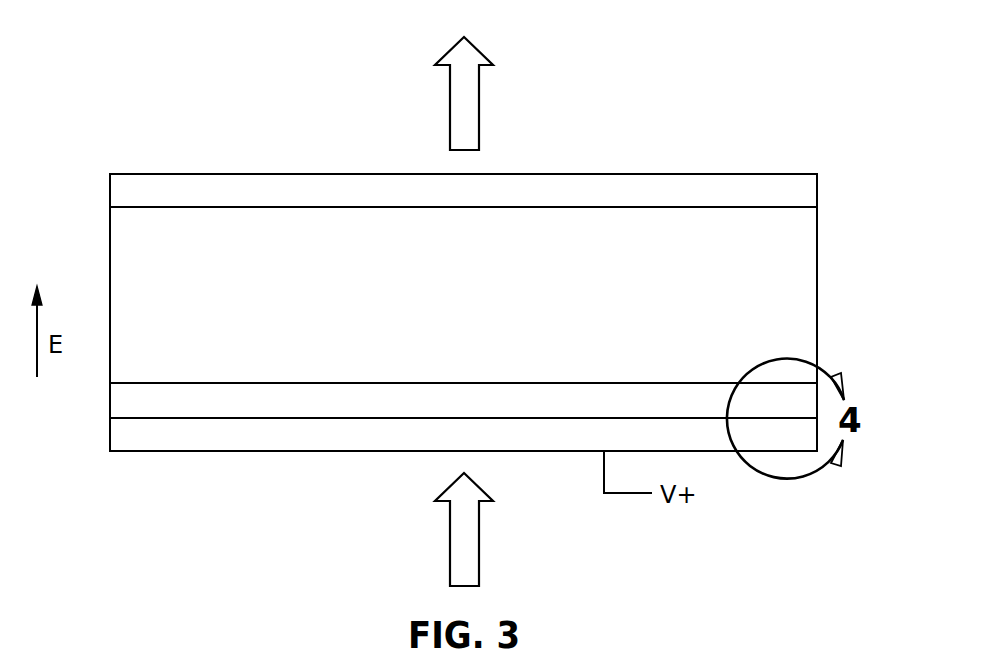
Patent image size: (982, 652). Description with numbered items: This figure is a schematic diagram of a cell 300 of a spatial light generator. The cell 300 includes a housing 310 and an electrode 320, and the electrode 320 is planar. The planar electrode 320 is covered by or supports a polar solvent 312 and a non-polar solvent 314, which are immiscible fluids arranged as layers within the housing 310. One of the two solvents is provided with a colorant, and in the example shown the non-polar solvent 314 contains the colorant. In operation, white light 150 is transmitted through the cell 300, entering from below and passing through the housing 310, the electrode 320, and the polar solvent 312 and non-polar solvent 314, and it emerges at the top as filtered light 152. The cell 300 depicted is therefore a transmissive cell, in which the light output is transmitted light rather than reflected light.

The cell 300 is at (716, 102).
The housing 310 is at (819, 299).
The polar solvent 312 is at (130, 259).
The non-polar solvent 314 is at (109, 400).
The electrode 320 is at (109, 433).
The white light 150 is at (481, 543).
The filtered light 152 is at (481, 108).